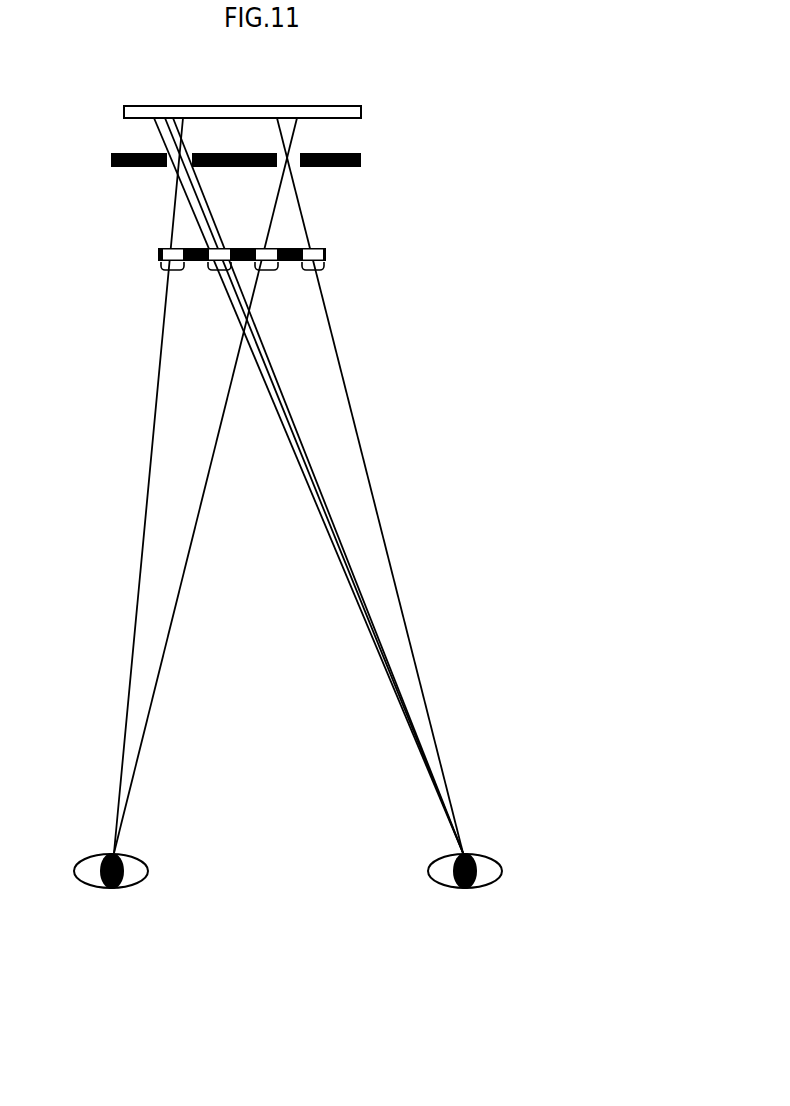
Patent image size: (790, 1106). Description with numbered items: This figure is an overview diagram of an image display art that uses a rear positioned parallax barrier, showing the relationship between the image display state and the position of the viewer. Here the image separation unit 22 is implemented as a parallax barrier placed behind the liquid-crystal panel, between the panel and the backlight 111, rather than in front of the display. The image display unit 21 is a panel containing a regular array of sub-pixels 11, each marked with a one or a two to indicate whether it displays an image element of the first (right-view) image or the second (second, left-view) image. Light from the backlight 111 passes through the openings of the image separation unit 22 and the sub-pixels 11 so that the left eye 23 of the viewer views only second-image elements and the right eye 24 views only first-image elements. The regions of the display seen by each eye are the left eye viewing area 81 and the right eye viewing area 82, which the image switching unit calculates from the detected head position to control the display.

The backlight 111 is at (372, 106).
The image separation unit 22 is at (363, 153).
The image display unit 21 is at (254, 240).
The sub-pixels 11 is at (162, 245).
The right eye viewing area 82 is at (160, 275).
The left eye viewing area 81 is at (313, 273).
The left eye 23 is at (90, 887).
The right eye 24 is at (443, 887).